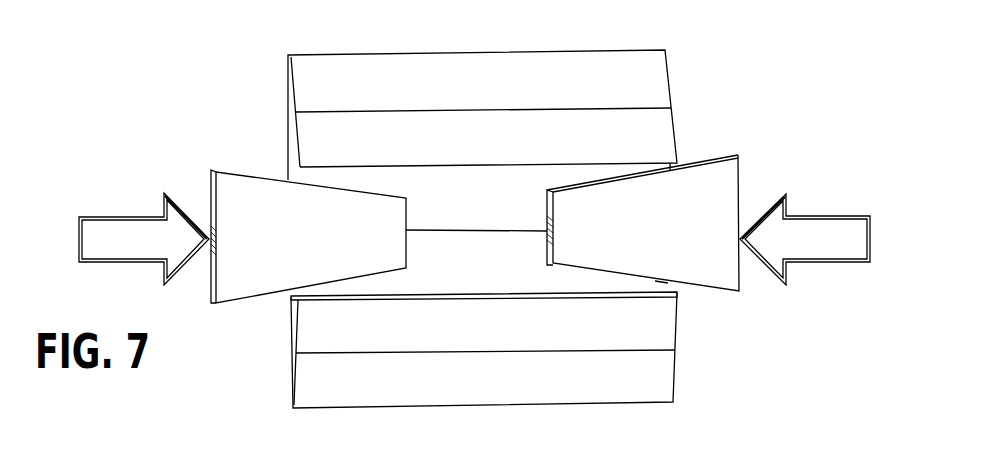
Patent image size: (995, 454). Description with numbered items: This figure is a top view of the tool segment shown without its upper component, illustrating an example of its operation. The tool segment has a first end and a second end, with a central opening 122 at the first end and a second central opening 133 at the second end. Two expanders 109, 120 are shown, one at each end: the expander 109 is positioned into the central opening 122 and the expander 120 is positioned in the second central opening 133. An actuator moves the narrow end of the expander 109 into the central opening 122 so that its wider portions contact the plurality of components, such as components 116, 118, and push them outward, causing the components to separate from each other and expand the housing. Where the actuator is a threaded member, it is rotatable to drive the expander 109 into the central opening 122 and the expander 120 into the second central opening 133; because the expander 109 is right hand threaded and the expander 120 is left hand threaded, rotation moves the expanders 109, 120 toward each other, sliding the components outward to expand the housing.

The upper block 116 is at (307, 62).
The expander 109 is at (253, 176).
The expander 120 is at (702, 163).
The central opening 122 is at (292, 296).
The lower block 118 is at (312, 382).
The second central opening 133 is at (660, 283).